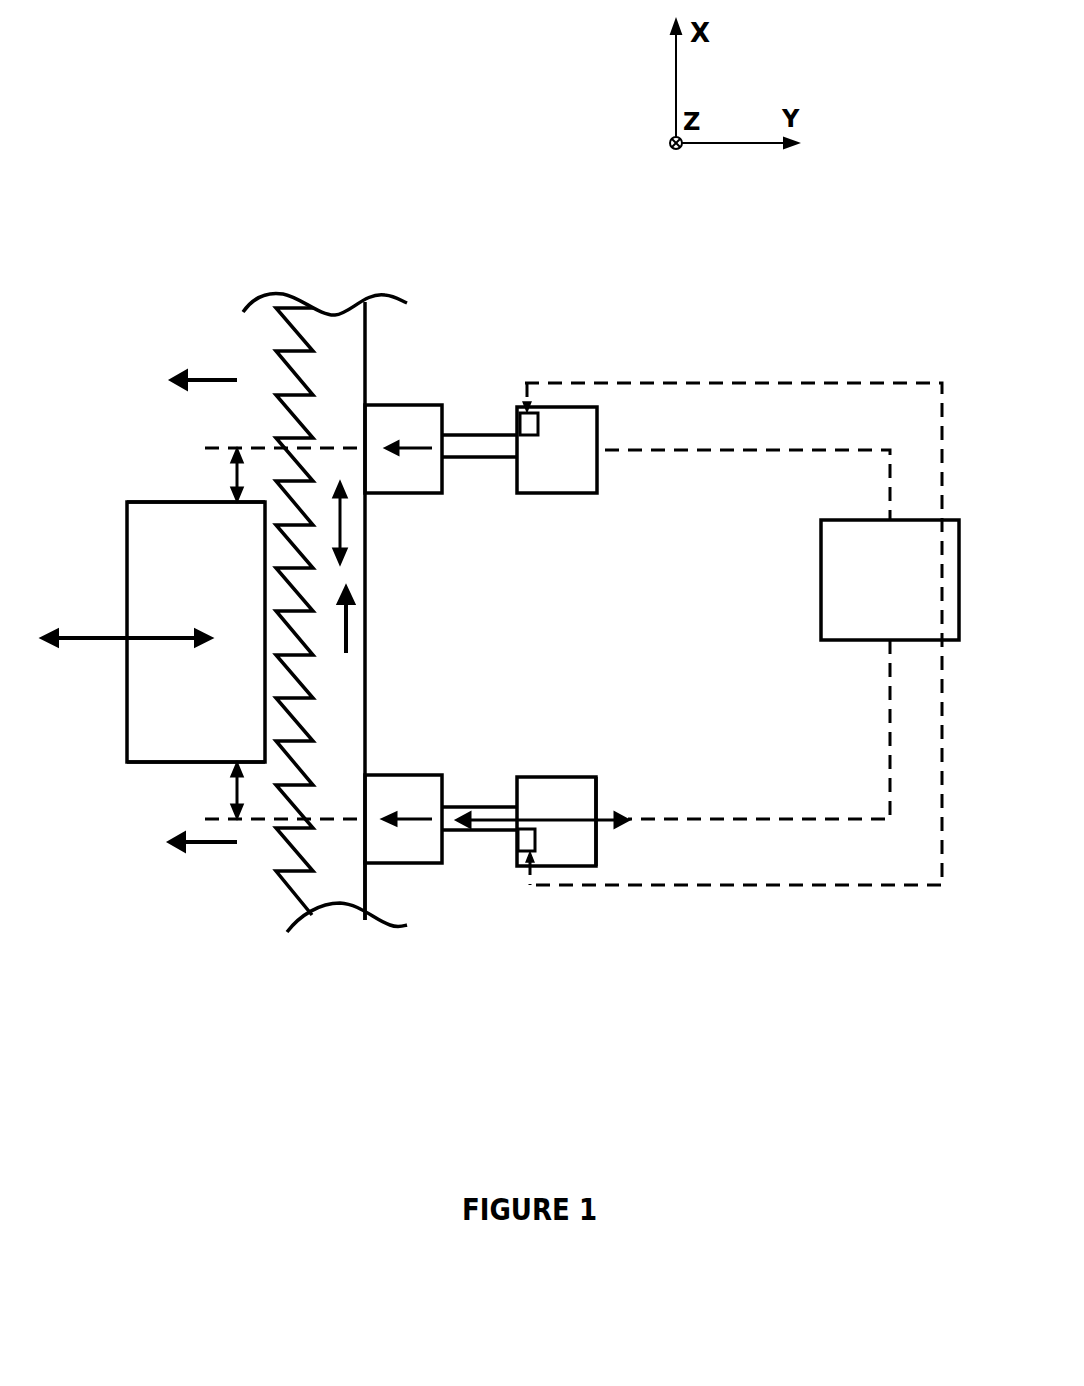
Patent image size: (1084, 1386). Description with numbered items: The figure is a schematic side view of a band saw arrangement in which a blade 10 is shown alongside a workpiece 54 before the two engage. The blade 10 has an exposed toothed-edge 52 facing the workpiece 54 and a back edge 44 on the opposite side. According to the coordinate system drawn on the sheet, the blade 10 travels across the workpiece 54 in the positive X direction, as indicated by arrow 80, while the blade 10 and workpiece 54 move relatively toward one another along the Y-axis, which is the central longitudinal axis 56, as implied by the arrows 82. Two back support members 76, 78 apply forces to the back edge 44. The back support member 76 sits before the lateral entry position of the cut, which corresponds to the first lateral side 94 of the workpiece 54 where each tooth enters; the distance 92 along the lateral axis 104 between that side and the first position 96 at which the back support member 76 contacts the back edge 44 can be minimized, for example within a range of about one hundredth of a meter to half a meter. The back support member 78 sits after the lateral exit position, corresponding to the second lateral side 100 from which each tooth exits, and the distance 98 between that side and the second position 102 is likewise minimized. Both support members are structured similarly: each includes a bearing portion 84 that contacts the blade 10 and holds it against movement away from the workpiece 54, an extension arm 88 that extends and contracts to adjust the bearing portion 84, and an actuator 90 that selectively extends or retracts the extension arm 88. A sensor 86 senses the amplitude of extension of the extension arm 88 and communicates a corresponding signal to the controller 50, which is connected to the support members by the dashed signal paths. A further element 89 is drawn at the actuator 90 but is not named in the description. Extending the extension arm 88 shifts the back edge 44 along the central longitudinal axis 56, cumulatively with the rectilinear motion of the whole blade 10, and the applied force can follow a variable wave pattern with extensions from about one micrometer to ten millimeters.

The blade 10 is at (333, 345).
The back edge 44 is at (370, 343).
The controller 50 is at (782, 634).
The toothed-edge 52 is at (250, 895).
The workpiece 54 is at (196, 632).
The central longitudinal axis 56 is at (135, 640).
The back support member 76 is at (615, 848).
The back support member 78 is at (653, 550).
The arrow 80 is at (350, 632).
The arrows 82 is at (200, 375).
The bearing portion 84 is at (410, 800).
The sensor 86 is at (527, 880).
The extension arm 88 is at (490, 800).
The motor housing edge 89 is at (600, 800).
The actuator 90 is at (567, 790).
The distance 92 is at (237, 790).
The first lateral side 94 is at (158, 762).
The first position 96 is at (370, 822).
The distance 98 is at (237, 470).
The second lateral side 100 is at (153, 500).
The second position 102 is at (372, 448).
The lateral axis 104 is at (342, 538).